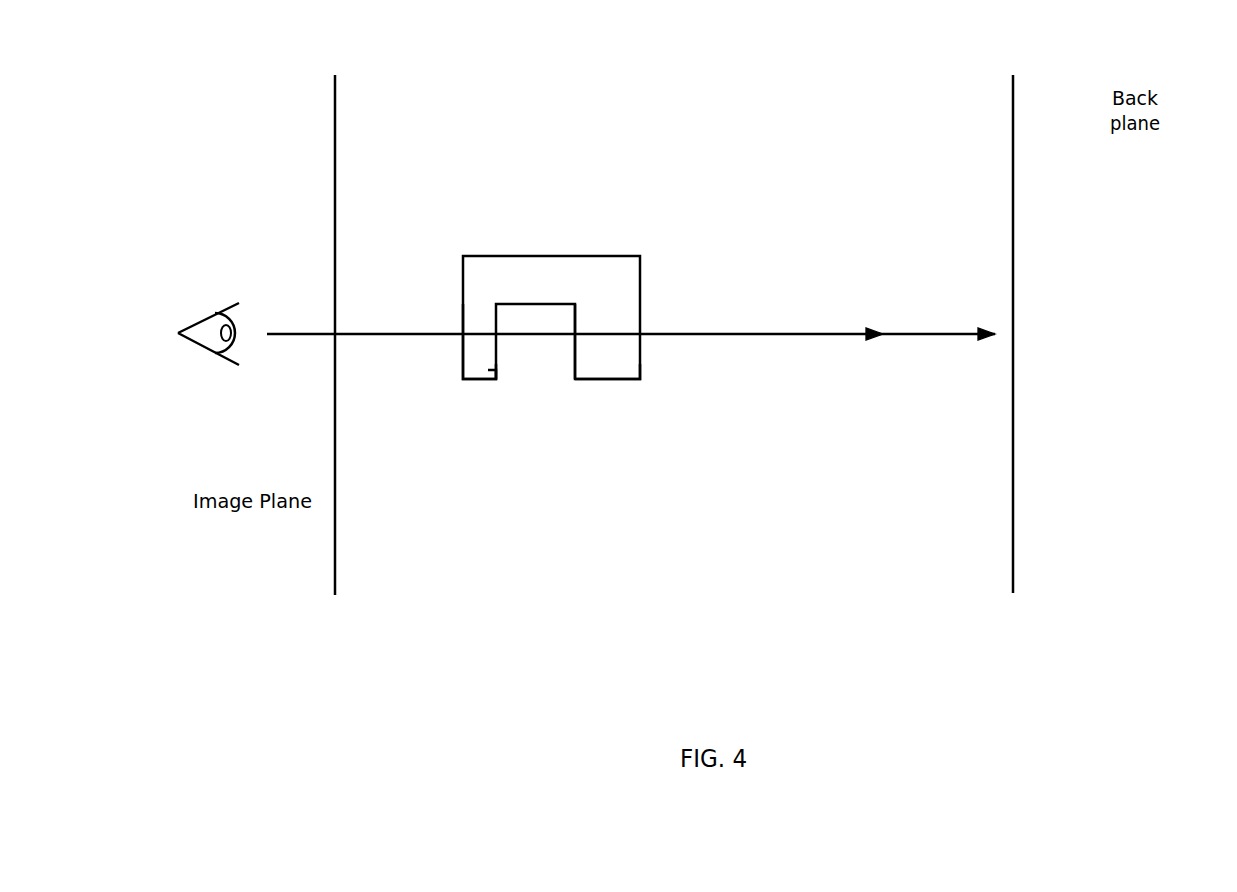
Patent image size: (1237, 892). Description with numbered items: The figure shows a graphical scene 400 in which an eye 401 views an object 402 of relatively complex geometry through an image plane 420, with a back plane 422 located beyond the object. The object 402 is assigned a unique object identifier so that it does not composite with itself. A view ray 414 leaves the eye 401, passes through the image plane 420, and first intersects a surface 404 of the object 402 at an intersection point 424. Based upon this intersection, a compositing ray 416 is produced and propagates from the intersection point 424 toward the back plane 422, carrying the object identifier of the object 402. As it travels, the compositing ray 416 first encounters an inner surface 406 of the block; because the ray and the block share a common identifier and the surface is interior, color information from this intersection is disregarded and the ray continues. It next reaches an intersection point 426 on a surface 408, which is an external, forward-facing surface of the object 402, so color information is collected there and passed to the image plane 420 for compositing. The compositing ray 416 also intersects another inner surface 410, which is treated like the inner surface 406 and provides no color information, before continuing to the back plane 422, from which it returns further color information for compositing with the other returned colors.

The graphical scene 400 is at (268, 63).
The eye 401 is at (228, 309).
The object 402 is at (604, 256).
The surface 404 is at (462, 368).
The inner surface 406 is at (490, 371).
The surface 408 is at (575, 372).
The inner surface 410 is at (640, 379).
The view ray 414 is at (412, 333).
The compositing ray 416 is at (879, 332).
The image plane 420 is at (335, 553).
The back plane 422 is at (1013, 580).
The intersection point 424 is at (462, 333).
The intersection point 426 is at (577, 332).